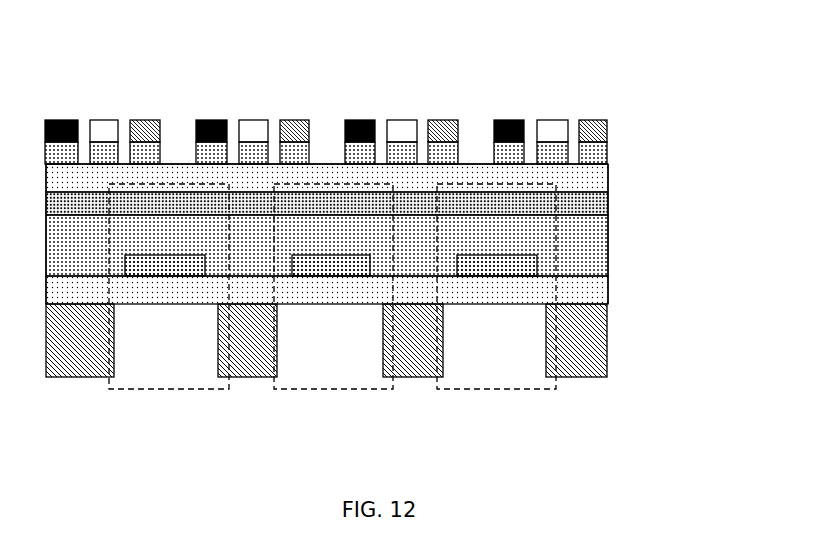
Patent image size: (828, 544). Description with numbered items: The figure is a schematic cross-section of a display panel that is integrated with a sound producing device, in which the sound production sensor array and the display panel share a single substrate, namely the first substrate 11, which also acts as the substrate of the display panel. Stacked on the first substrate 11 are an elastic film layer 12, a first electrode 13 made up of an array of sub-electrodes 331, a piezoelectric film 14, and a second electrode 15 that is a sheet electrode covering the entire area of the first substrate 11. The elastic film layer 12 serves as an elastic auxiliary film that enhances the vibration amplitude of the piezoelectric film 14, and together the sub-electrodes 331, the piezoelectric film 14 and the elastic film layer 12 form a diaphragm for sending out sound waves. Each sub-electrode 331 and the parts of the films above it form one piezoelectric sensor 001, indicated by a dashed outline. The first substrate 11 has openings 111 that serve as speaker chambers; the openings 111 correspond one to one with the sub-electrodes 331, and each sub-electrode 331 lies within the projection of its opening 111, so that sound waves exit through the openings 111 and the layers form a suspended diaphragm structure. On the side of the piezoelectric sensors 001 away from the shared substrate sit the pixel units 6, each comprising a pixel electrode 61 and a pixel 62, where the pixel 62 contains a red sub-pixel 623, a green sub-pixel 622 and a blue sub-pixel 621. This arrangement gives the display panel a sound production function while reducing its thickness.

The pixel unit 6 is at (344, 119).
The pixel electrode 61 is at (613, 143).
The pixel 62 is at (552, 113).
The blue sub-pixel 621 is at (593, 131).
The green sub-pixel 622 is at (552, 131).
The red sub-pixel 623 is at (509, 131).
The second electrode 15 is at (565, 203).
The piezoelectric film 14 is at (567, 232).
The first electrode 13 is at (362, 263).
The sub-electrode 331 is at (331, 265).
The elastic film layer 12 is at (567, 287).
The first substrate 11 is at (618, 304).
The opening 111 is at (443, 341).
The piezoelectric sensor 001 is at (197, 389).